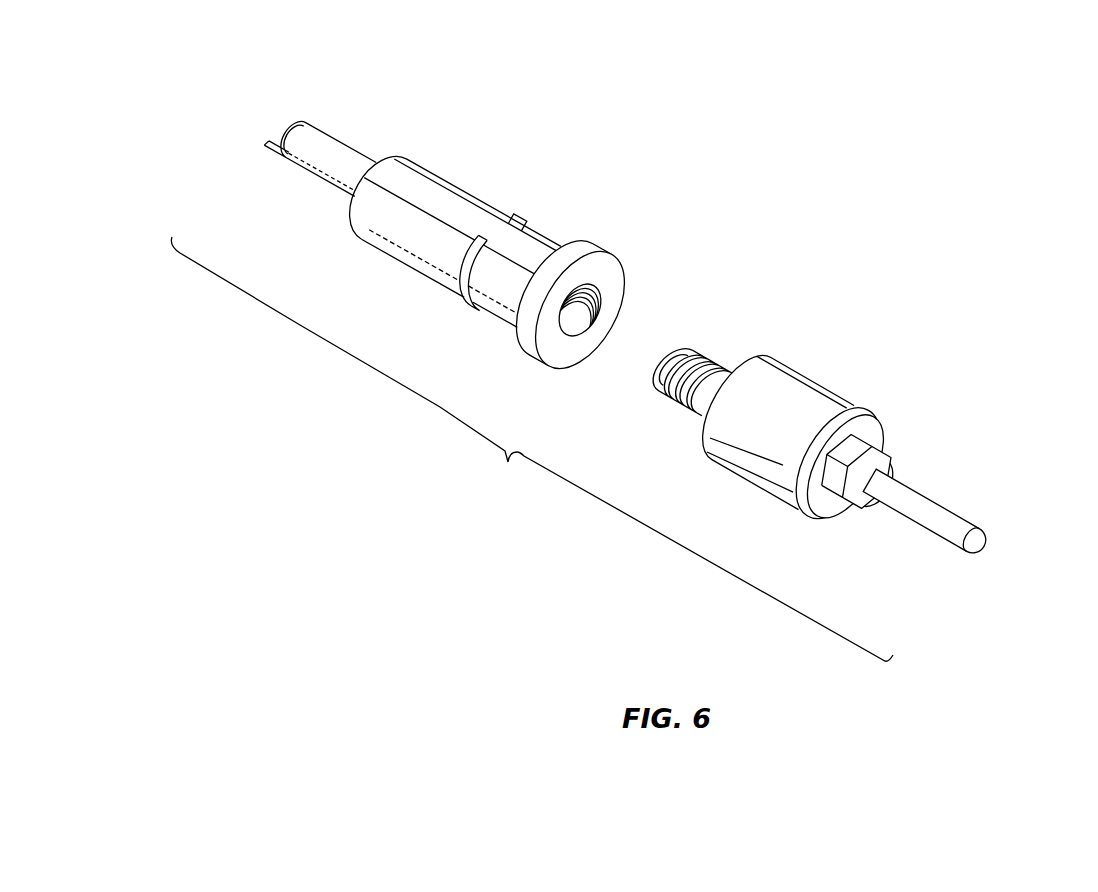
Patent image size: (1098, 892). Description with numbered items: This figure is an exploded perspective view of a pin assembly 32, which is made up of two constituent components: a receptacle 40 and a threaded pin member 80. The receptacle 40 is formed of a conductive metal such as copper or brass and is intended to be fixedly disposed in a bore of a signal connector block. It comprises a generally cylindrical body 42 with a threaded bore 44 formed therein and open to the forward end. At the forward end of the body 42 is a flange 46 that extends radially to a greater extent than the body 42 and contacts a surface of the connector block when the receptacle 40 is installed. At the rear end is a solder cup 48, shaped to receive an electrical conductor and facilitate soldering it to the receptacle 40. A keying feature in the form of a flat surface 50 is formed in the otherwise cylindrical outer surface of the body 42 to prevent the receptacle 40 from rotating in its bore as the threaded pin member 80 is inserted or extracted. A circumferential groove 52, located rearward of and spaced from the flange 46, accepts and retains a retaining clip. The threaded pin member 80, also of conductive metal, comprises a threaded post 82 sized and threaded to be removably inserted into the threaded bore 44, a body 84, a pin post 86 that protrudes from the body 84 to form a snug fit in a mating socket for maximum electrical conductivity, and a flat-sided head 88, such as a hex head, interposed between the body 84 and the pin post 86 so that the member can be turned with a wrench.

The pin assembly 32 is at (532, 449).
The receptacle 40 is at (484, 218).
The body 42 is at (395, 243).
The threaded bore 44 is at (583, 308).
The flange 46 is at (574, 257).
The solder cup 48 is at (300, 137).
The flat surface 50 is at (432, 190).
The circumferential groove 52 is at (470, 290).
The threaded pin member 80 is at (862, 428).
The threaded post 82 is at (707, 350).
The body 84 is at (797, 375).
The pin post 86 is at (940, 517).
The flat-sided head 88 is at (857, 447).